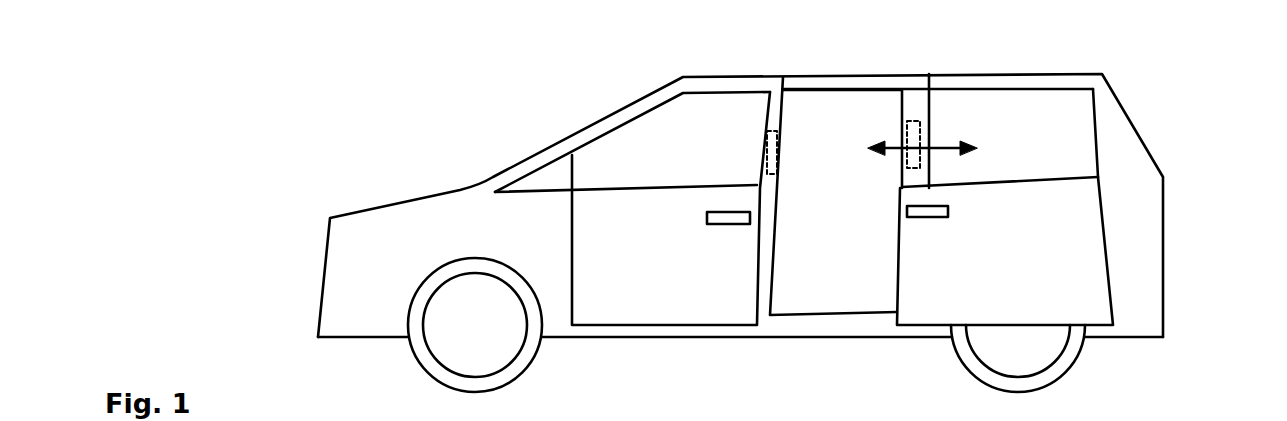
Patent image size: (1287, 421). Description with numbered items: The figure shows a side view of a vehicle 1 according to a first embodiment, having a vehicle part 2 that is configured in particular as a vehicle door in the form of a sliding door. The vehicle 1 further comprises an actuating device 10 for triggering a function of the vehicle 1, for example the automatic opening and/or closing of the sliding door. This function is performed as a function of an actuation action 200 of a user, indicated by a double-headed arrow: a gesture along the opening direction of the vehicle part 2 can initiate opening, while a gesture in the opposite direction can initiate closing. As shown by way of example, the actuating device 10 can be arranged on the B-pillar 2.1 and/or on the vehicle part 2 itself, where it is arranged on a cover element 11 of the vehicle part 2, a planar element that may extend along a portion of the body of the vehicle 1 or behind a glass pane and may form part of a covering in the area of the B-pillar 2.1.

The vehicle 1 is at (201, 124).
The vehicle part 2 is at (1088, 239).
The B-pillar 2.1 is at (770, 107).
The actuating device 10 is at (782, 152).
The cover element 11 is at (912, 103).
The actuation action 200 is at (943, 147).